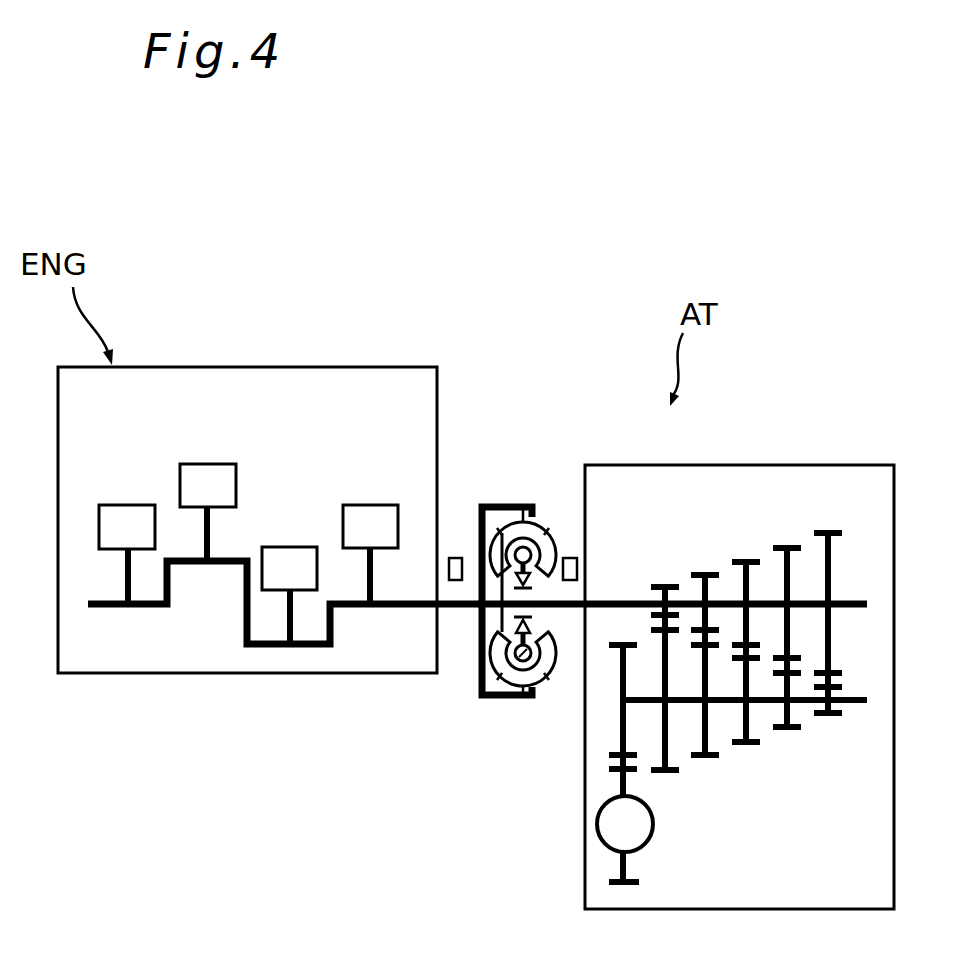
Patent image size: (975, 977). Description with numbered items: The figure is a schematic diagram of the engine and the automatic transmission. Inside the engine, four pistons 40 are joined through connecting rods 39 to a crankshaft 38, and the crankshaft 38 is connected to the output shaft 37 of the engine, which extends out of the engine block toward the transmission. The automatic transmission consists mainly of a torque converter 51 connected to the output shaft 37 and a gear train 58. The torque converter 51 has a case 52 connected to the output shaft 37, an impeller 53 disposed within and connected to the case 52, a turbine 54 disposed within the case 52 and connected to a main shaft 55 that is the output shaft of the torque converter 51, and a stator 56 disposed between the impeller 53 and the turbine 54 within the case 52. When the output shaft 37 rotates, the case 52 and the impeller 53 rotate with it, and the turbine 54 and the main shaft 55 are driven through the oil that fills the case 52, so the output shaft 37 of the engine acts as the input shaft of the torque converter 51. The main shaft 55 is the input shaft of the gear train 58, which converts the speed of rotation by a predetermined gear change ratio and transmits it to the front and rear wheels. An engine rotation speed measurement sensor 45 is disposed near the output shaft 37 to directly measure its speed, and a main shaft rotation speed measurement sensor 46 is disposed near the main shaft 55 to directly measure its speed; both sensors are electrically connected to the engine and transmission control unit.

The output shaft 37 is at (462, 608).
The crankshaft 38 is at (263, 649).
The connecting rod 39 is at (132, 577).
The piston 40 is at (127, 518).
The engine rotation speed measurement sensor 45 is at (455, 557).
The main shaft rotation speed measurement sensor 46 is at (569, 557).
The torque converter 51 is at (505, 561).
The case 52 is at (485, 705).
The impeller 53 is at (548, 522).
The turbine 54 is at (516, 508).
The main shaft 55 is at (556, 665).
The stator 56 is at (513, 701).
The gear train 58 is at (838, 452).